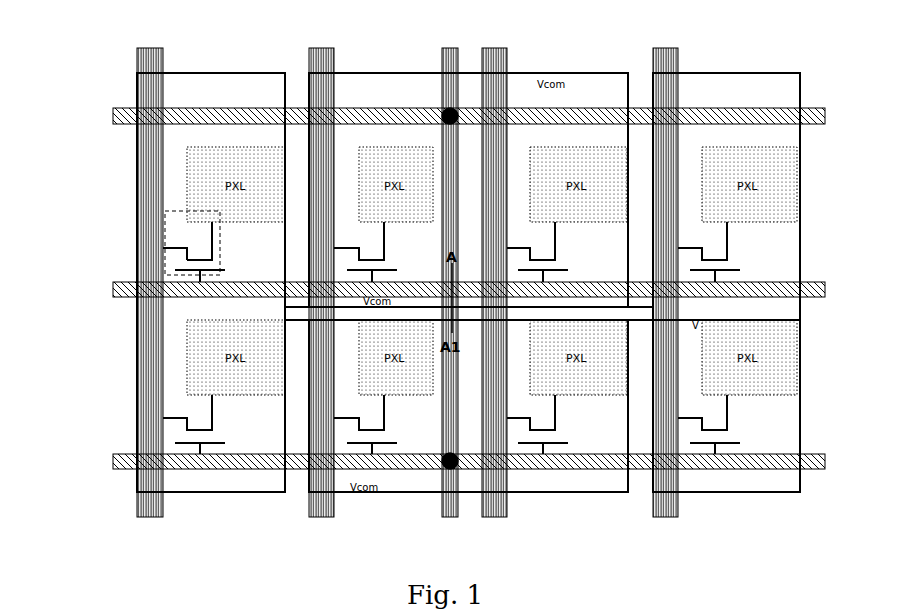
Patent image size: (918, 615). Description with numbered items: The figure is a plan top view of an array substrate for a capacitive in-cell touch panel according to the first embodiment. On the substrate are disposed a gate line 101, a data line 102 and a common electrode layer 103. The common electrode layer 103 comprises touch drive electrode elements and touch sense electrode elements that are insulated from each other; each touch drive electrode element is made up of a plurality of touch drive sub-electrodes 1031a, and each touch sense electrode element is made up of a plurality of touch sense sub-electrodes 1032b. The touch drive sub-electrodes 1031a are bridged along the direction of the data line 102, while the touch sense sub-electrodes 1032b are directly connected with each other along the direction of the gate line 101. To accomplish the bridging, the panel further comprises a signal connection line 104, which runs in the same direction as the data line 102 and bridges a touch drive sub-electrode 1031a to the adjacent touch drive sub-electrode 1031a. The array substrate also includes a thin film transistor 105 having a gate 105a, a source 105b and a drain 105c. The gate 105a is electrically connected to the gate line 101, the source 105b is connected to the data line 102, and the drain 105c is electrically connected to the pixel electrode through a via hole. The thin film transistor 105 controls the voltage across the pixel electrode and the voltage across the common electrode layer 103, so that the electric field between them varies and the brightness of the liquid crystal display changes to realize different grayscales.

The gate line 101 is at (270, 110).
The data line 102 is at (652, 52).
The common electrode layer 103 is at (197, 95).
The signal connection line 104 is at (452, 63).
The thin film transistor 105 is at (135, 253).
The gate 105a is at (143, 288).
The source 105b is at (187, 248).
The drain 105c is at (210, 233).
The touch drive sub-electrode 1031a is at (525, 492).
The touch sense sub-electrode 1032b is at (703, 492).